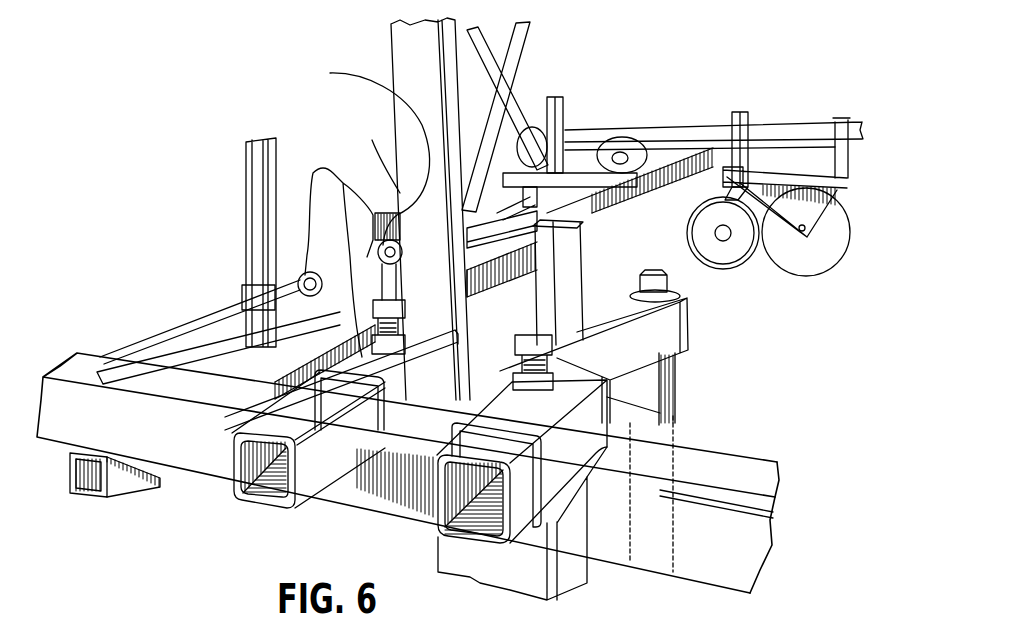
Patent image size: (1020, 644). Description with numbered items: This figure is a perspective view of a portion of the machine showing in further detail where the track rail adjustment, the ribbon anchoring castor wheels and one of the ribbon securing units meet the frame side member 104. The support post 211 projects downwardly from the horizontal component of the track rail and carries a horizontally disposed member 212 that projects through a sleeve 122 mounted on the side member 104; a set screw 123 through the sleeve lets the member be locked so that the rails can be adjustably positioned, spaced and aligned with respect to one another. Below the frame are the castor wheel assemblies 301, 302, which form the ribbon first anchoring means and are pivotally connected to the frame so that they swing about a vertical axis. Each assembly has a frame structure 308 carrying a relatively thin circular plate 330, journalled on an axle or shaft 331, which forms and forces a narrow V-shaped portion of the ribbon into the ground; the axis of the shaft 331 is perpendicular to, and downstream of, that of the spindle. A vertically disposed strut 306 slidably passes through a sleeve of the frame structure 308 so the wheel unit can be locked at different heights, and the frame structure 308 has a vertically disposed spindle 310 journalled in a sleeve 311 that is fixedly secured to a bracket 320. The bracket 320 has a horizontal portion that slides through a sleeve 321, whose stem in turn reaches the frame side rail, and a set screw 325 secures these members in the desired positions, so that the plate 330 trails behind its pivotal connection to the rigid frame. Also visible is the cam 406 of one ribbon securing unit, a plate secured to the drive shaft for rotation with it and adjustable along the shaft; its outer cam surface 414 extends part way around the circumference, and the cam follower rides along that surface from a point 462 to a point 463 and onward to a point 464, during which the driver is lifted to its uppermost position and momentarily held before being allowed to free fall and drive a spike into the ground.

The side member 104 is at (195, 458).
The castor wheel assembly 302 is at (695, 403).
The horizontally disposed member 212 is at (287, 412).
The point on cam surface 462 is at (298, 279).
The sleeve 122 is at (362, 357).
The point on cam surface 464 is at (313, 173).
The cam 406 is at (323, 215).
The outer cam surface 414 is at (330, 73).
The set screw 123 is at (347, 190).
The point on cam surface 463 is at (380, 298).
The support post 211 is at (407, 32).
The set screw 325 is at (535, 333).
The strut 306 is at (723, 137).
The axle or shaft 331 is at (803, 228).
The frame structure 308 is at (800, 162).
The circular plate 330 is at (780, 252).
The castor wheel assembly 301 is at (820, 290).
The bracket 320 is at (477, 455).
The spindle 310 is at (667, 280).
The sleeve 311 is at (627, 377).
The sleeve 321 is at (587, 445).